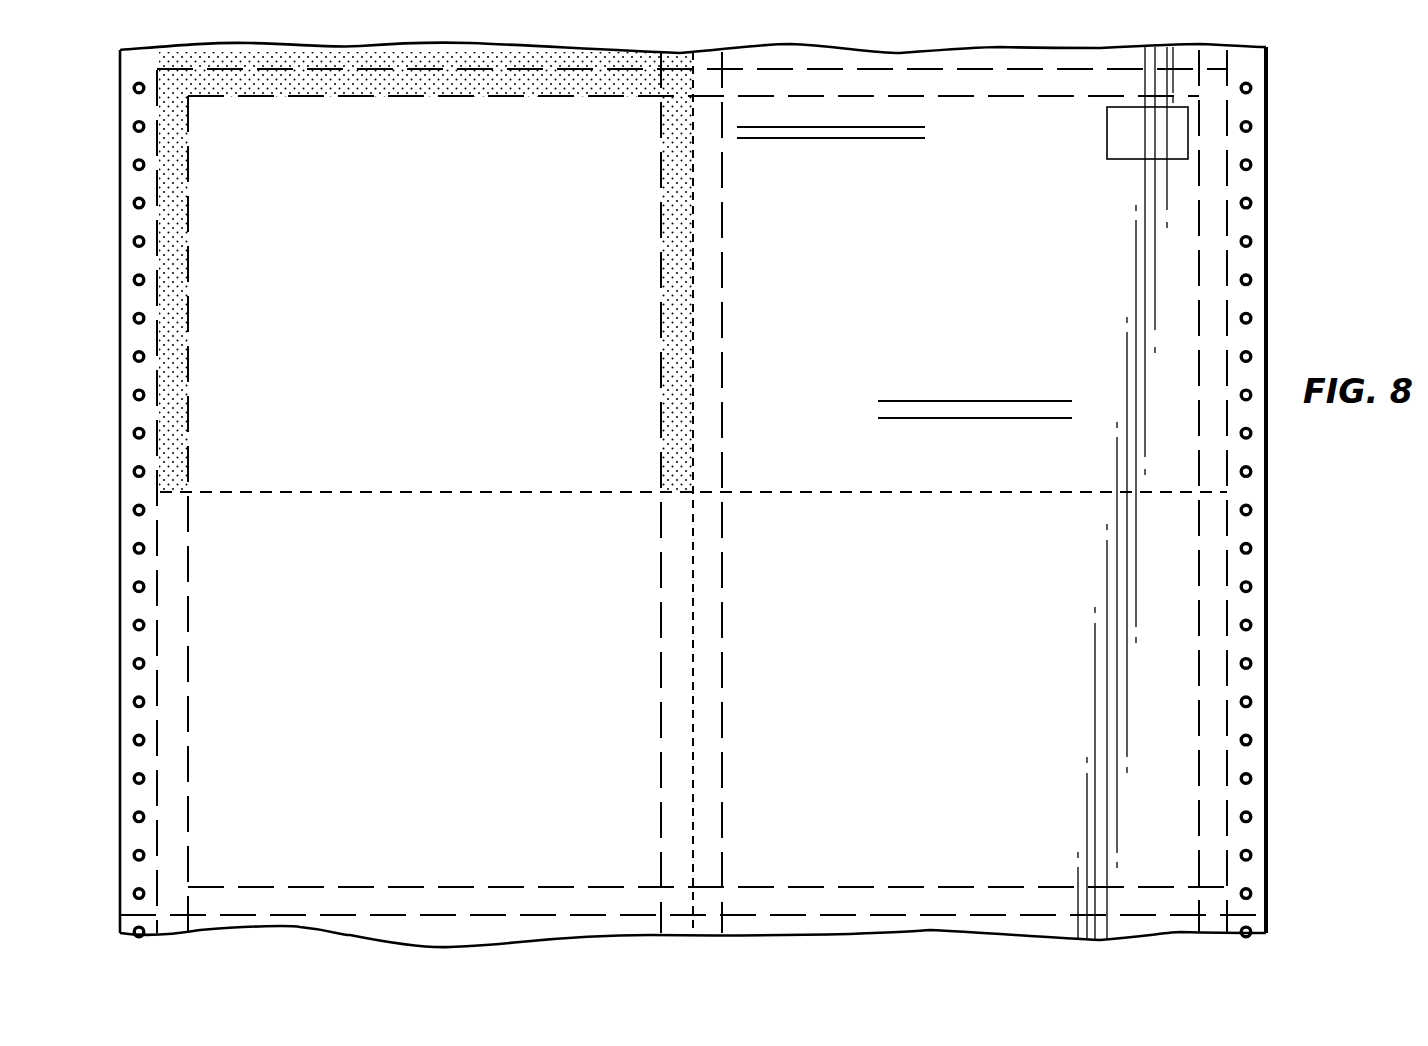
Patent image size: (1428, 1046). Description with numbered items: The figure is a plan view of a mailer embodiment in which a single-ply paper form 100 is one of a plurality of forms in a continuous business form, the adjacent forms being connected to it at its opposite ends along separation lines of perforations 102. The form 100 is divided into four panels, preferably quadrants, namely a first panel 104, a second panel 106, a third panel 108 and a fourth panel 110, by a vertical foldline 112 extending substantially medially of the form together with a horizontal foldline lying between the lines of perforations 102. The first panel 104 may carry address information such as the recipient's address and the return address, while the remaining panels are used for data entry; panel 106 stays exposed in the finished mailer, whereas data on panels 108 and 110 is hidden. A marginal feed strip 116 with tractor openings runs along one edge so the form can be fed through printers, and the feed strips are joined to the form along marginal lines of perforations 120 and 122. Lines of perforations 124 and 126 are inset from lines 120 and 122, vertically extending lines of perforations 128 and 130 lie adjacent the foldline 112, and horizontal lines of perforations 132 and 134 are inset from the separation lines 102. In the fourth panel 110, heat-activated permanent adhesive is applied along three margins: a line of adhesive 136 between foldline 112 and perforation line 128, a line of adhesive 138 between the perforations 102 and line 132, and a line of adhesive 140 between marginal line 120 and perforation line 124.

The single-ply paper form 100 is at (1218, 225).
The lines of perforations 102 is at (950, 70).
The first panel 104 is at (946, 277).
The second panel 106 is at (927, 647).
The third panel 108 is at (434, 647).
The fourth panel 110 is at (442, 328).
The foldline 112 is at (696, 291).
The marginal feed strip 116 is at (135, 229).
The marginal line of perforations 120 is at (157, 301).
The marginal line of perforations 122 is at (1228, 298).
The line of perforations 124 is at (190, 240).
The line of perforations 126 is at (1200, 317).
The vertically extending line of perforations 128 is at (661, 251).
The vertically extending line of perforations 130 is at (722, 237).
The horizontal line of perforations 132 is at (206, 98).
The horizontal line of perforations 134 is at (440, 887).
The line of adhesive 136 is at (672, 206).
The line of adhesive 138 is at (512, 90).
The line of adhesive 140 is at (183, 178).